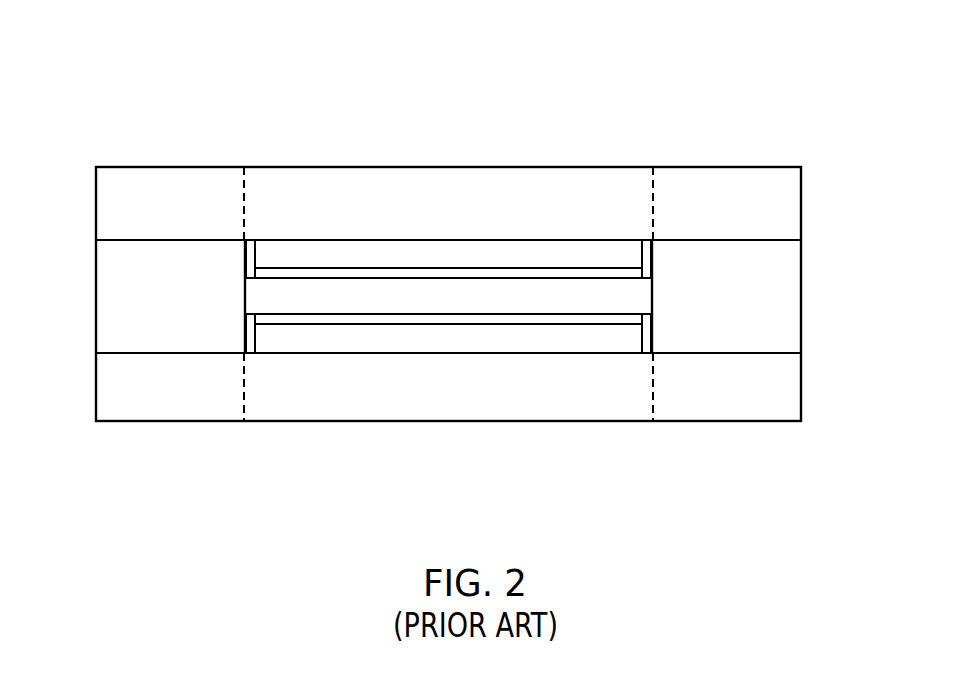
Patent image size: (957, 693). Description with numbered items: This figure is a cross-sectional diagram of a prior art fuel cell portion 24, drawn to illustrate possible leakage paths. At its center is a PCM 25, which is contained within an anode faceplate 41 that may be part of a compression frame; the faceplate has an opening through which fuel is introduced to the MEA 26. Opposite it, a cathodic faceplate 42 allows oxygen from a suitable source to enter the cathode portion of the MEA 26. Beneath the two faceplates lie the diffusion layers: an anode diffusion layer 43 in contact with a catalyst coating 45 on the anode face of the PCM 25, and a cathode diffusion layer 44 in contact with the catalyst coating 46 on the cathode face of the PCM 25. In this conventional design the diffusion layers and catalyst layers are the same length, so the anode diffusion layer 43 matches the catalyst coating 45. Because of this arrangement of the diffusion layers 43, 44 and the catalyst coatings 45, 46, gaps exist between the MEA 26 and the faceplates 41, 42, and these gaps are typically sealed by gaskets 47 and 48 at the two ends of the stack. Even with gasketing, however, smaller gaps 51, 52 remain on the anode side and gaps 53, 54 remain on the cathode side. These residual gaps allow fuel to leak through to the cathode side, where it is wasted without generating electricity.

The fuel cell portion 24 is at (548, 60).
The PCM 25 is at (470, 293).
The MEA 26 is at (225, 245).
The anode faceplate 41 is at (577, 183).
The cathodic faceplate 42 is at (530, 405).
The anode diffusion layer 43 is at (622, 252).
The cathode diffusion layer 44 is at (603, 342).
The catalyst coating 45 is at (295, 273).
The catalyst coating 46 is at (295, 320).
The gasket 47 is at (115, 291).
The gasket 48 is at (777, 277).
The gap 51 is at (246, 257).
The gap 52 is at (648, 265).
The gap 53 is at (245, 342).
The gap 54 is at (648, 333).